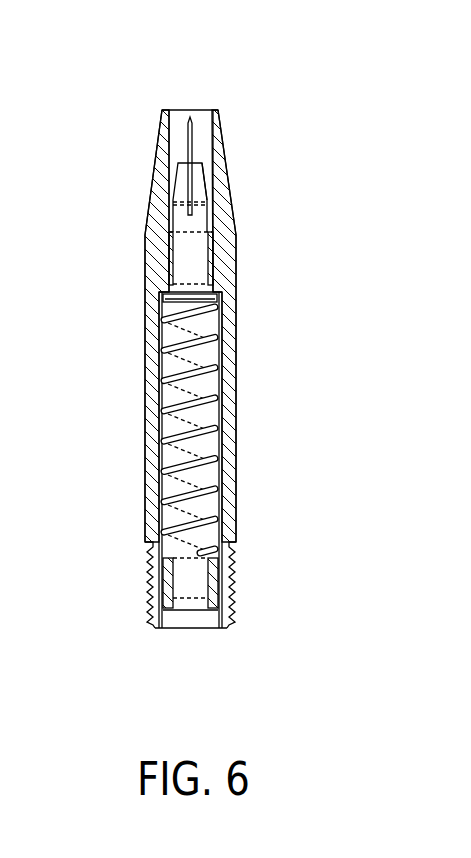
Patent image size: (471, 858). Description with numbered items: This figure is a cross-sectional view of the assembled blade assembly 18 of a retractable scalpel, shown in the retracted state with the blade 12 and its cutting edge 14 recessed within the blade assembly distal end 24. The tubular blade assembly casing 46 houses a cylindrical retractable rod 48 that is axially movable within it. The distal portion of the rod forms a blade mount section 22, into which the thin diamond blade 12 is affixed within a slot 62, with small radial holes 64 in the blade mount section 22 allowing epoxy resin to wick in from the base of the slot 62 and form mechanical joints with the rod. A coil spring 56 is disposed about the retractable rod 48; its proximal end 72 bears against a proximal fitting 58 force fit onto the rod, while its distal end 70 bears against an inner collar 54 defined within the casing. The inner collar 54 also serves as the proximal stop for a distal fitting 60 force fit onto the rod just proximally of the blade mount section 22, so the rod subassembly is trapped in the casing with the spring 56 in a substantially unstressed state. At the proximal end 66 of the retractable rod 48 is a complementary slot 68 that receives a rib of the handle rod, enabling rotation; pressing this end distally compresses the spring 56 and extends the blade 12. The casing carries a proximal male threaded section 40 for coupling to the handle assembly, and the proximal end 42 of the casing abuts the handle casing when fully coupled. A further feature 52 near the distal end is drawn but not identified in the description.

The blade 12 is at (188, 138).
The cutting edge 14 is at (187, 112).
The blade assembly 18 is at (143, 325).
The blade mount section 22 is at (177, 164).
The blade assembly distal end 24 is at (163, 110).
The proximal male threaded section 40 is at (235, 597).
The proximal end of blade assembly casing 42 is at (234, 545).
The blade assembly casing 46 is at (143, 365).
The retractable rod 48 is at (172, 391).
The nozzle top face 52 is at (203, 110).
The inner collar 54 is at (201, 286).
The coil spring 56 is at (163, 435).
The proximal fitting 58 is at (162, 577).
The distal fitting 60 is at (162, 260).
The slot 62 is at (195, 175).
The radial holes 64 is at (176, 200).
The proximal end of retractable rod 66 is at (200, 612).
The complementary slot 68 is at (182, 606).
The distal end of spring 70 is at (221, 294).
The proximal end of spring 72 is at (206, 558).